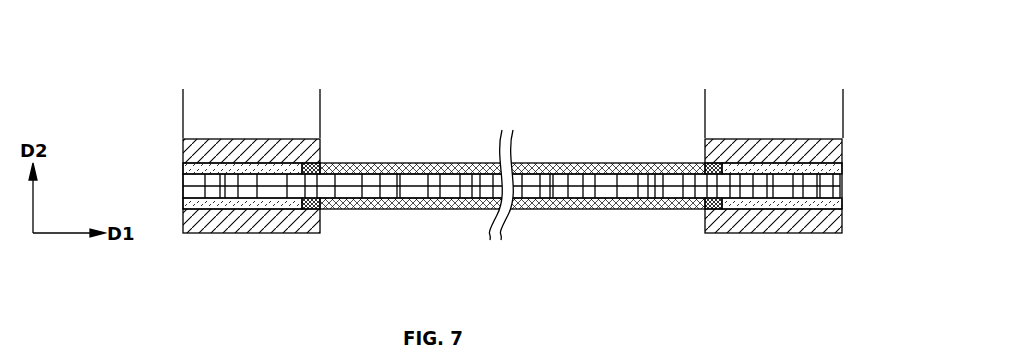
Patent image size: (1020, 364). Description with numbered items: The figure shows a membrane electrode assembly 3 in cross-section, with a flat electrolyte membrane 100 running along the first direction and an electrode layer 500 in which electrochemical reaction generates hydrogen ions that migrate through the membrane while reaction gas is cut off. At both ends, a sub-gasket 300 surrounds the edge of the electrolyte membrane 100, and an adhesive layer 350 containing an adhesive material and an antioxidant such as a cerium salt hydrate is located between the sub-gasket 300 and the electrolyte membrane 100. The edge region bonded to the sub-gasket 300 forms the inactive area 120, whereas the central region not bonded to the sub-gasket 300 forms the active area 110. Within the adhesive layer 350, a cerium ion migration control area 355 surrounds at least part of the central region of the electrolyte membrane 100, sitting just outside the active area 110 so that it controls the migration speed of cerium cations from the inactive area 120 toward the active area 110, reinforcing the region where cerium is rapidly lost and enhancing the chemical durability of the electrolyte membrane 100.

The membrane electrode assembly 3 is at (189, 50).
The electrolyte membrane 100 is at (840, 185).
The active area 110 is at (705, 96).
The inactive area 120 is at (320, 96).
The sub-gasket 300 is at (780, 224).
The adhesive layer 350 is at (840, 200).
The cerium ion migration control area 355 is at (714, 210).
The electrode layer 500 is at (624, 209).